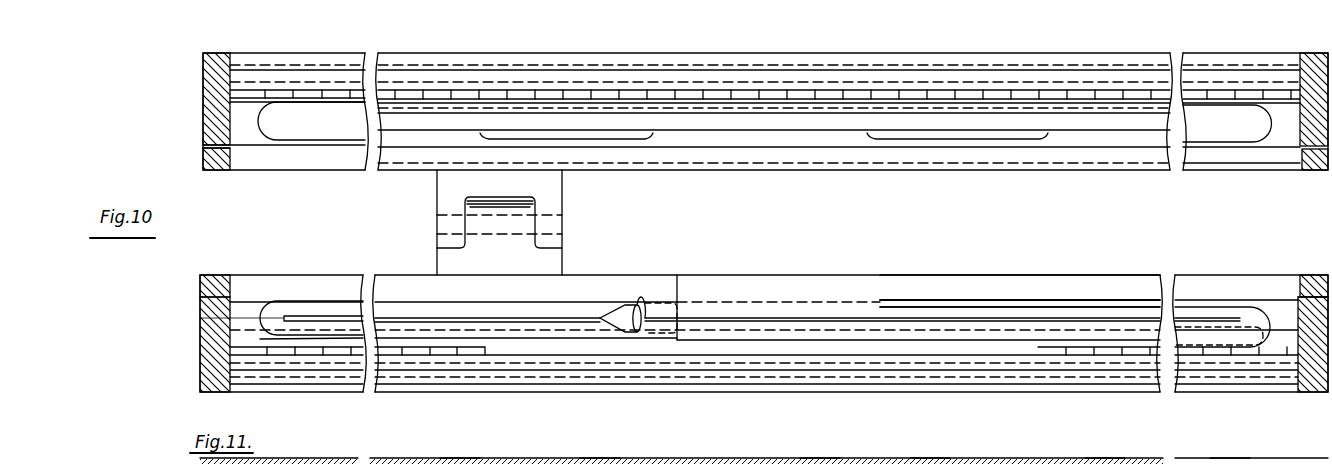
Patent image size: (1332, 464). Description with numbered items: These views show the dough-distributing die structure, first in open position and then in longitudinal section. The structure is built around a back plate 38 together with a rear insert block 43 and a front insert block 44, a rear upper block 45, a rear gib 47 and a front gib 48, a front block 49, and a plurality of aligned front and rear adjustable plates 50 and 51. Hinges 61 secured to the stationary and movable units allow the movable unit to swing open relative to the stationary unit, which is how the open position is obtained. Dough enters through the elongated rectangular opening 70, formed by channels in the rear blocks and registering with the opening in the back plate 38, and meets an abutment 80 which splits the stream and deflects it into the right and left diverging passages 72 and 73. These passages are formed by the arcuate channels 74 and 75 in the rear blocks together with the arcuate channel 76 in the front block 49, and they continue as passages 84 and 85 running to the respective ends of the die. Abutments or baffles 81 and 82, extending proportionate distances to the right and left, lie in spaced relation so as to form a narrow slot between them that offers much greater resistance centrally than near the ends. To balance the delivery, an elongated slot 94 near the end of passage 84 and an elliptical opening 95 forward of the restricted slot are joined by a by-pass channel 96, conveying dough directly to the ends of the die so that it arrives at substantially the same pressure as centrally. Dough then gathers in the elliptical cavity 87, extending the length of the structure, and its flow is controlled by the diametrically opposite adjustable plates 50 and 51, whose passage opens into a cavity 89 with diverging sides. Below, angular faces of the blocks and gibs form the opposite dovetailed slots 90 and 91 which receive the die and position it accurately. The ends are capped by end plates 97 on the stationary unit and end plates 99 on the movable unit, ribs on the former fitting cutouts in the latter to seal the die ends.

In FIG. 10, the end plate 97 is at (203, 92).
In FIG. 10, the end plate 99 is at (203, 157).
In FIG. 10, the front gib 48 is at (1025, 62).
In FIG. 10, the dovetailed slot 90 is at (1078, 78).
In FIG. 10, the cavity 89 is at (883, 84).
In FIG. 10, the front adjustable plate 50 is at (936, 98).
In FIG. 10, the front insert block 44 is at (790, 112).
In FIG. 10, the abutment 81 is at (840, 136).
In FIG. 11, the abutment 81 is at (1110, 352).
In FIG. 10, the arcuate shaped channel 76 is at (414, 139).
In FIG. 10, the elliptical shaped passage 87 is at (1107, 126).
In FIG. 10, the front block 49 is at (1006, 160).
In FIG. 10, the hinge 61 is at (562, 229).
In FIG. 11, the elongated slot 94 is at (318, 314).
In FIG. 11, the rectangular opening 70 is at (795, 300).
In FIG. 11, the channel 96 is at (573, 316).
In FIG. 11, the elliptical opening 95 is at (622, 310).
In FIG. 11, the rear adjustable plate 51 is at (445, 350).
In FIG. 11, the dovetailed slot 91 is at (715, 372).
In FIG. 11, the rear gib 47 is at (826, 385).
In FIG. 11, the abutment 82 is at (955, 280).
In FIG. 11, the rear insert block 43 is at (1280, 336).
In FIG. 11, the arcuate shaped channel 75 is at (980, 334).
In FIG. 11, the rear upper block 45 is at (1040, 283).
In FIG. 11, the arcuate shaped channel 74 is at (1068, 310).
In FIG. 11, the passage 84 is at (462, 453).
In FIG. 11, the diverging passage 72 is at (610, 460).
In FIG. 11, the abutment 80 is at (819, 461).
In FIG. 11, the diverging passage 73 is at (928, 461).
In FIG. 11, the passage 85 is at (1104, 461).
In FIG. 11, the back plate 38 is at (1225, 461).